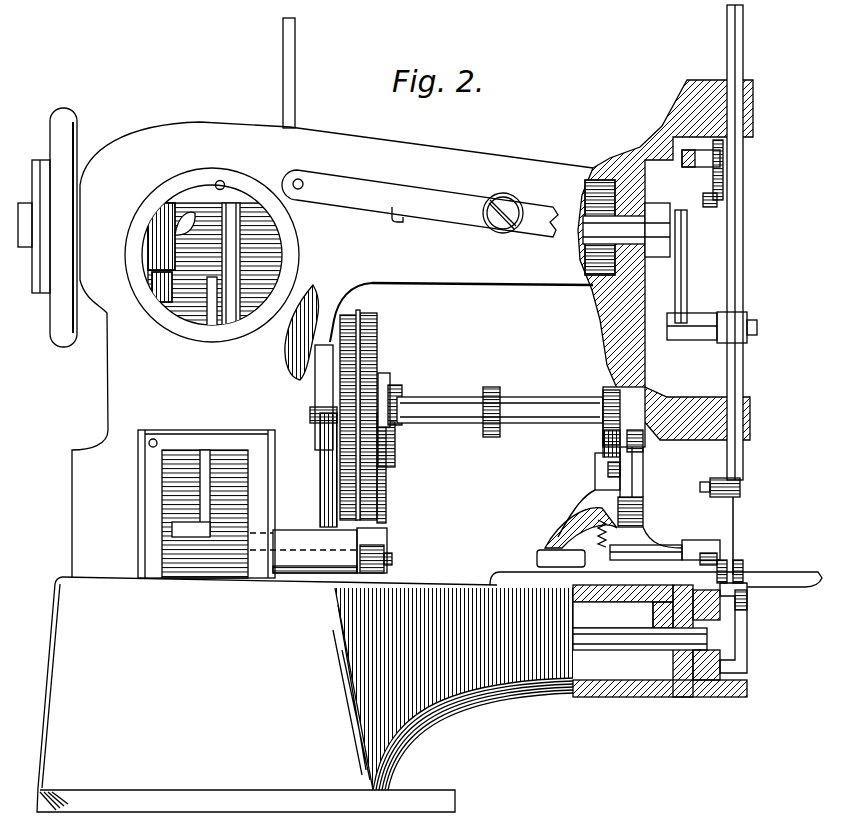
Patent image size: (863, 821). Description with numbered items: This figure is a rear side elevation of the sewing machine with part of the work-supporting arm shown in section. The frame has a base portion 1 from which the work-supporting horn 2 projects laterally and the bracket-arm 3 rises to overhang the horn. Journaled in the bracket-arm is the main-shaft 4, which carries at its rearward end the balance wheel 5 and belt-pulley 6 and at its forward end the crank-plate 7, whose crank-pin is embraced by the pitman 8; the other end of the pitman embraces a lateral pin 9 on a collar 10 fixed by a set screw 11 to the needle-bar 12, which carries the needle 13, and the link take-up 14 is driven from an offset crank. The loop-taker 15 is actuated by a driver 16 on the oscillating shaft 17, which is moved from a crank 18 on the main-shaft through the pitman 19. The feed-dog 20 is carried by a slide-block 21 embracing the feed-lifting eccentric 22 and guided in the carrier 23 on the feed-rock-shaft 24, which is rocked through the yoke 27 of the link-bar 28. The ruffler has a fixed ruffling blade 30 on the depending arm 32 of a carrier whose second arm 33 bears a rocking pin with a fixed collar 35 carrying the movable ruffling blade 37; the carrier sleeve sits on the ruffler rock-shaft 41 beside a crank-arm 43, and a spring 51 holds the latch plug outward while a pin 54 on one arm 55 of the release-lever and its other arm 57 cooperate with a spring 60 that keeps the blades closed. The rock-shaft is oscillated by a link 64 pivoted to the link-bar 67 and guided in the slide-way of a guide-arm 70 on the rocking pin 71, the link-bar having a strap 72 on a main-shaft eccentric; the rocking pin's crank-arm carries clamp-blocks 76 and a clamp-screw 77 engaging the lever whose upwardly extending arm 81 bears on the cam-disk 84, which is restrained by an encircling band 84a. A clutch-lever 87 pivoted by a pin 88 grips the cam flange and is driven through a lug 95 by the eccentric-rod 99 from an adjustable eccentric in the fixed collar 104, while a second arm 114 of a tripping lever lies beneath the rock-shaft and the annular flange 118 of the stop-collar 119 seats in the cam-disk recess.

The base portion 1 is at (267, 694).
The work-supporting horn 2 is at (538, 692).
The bracket-arm 3 is at (332, 297).
The main-shaft 4 is at (575, 240).
The balance wheel 5 is at (63, 227).
The belt-pulley 6 is at (42, 162).
The crank-plate 7 is at (660, 203).
The pitman 8 is at (688, 278).
The lateral pin 9 is at (667, 313).
The collar 10 is at (744, 316).
The set screw 11 is at (757, 330).
The needle-bar 12 is at (743, 238).
The needle 13 is at (733, 530).
The link take-up 14 is at (723, 147).
The loop-taker 15 is at (747, 598).
The driver 16 is at (747, 668).
The oscillating shaft 17 is at (598, 628).
The crank 18 is at (173, 205).
The pitman 19 is at (163, 293).
The feed-dog 20 is at (742, 572).
The slide-block 21 is at (700, 693).
The feed-lifting eccentric 22 is at (690, 658).
The carrier 23 is at (673, 608).
The feed-rock-shaft 24 is at (632, 665).
The yoke 27 is at (228, 207).
The link-bar 28 is at (233, 320).
The fixed ruffling blade 30 is at (587, 553).
The depending arm 32 is at (552, 540).
The second arm 33 is at (646, 546).
The fixed collar 35 is at (713, 547).
The movable ruffling blade 37 is at (695, 550).
The ruffler rock-shaft 41 is at (433, 398).
The crank-arm 43 is at (647, 448).
The spring 51 is at (648, 510).
The pin 54 is at (608, 468).
The arm of carrier-release-lever 55 is at (595, 457).
The arm of carrier-release-lever 57 is at (570, 518).
The spring 60 is at (619, 533).
The link 64 is at (182, 530).
The link-bar 67 is at (197, 448).
The guide-arm 70 is at (230, 460).
The rocking pin 71 is at (280, 543).
The strap 72 is at (205, 207).
The clamp-blocks 76 is at (388, 538).
The clamp-screw 77 is at (393, 557).
The upwardly extending arm 81 is at (386, 493).
The cam-disk 84 is at (377, 333).
The encircling band 84a is at (358, 313).
The clutch-lever 87 is at (332, 450).
The pin 88 is at (312, 415).
The lug 95 is at (323, 385).
The eccentric-rod 99 is at (303, 317).
The fixed collar 104 is at (282, 240).
The second arm 114 is at (397, 462).
The annular flange 118 is at (383, 377).
The stop-collar 119 is at (395, 390).